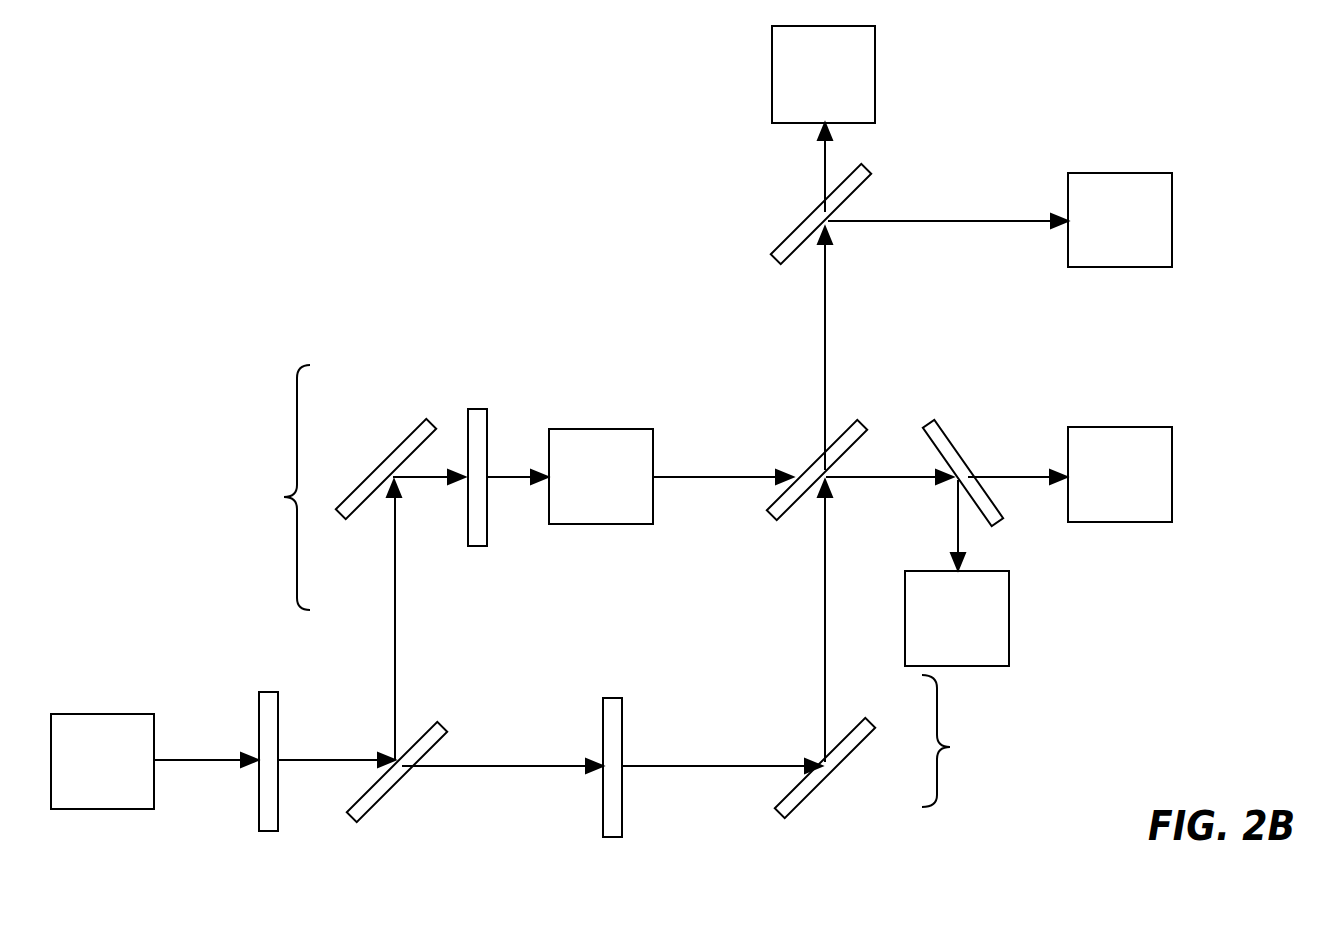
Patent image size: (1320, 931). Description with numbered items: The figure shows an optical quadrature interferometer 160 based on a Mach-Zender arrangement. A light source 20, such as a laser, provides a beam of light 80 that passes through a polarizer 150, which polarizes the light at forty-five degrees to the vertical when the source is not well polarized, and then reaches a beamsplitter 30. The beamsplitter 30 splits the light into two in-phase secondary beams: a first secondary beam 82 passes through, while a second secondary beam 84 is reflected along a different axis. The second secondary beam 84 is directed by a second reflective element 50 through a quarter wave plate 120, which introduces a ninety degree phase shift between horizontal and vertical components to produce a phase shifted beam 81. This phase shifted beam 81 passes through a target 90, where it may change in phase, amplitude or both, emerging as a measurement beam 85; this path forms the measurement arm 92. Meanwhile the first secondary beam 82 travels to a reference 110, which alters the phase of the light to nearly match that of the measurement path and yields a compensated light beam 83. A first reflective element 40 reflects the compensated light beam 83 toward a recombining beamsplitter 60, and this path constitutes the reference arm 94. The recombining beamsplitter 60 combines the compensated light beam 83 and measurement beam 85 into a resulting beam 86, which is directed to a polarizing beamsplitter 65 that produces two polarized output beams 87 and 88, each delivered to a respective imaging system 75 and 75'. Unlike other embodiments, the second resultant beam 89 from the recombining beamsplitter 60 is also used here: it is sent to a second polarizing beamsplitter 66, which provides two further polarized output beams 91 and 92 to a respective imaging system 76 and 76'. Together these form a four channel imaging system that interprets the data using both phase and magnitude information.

The light source 20 is at (102, 761).
The beamsplitter 30 is at (447, 737).
The first reflective element 40 is at (843, 772).
The second reflective element 50 is at (382, 462).
The recombining beamsplitter 60 is at (808, 462).
The polarizing beamsplitter 65 is at (960, 462).
The second polarizing beamsplitter 66 is at (800, 227).
The imaging system 75 is at (1120, 474).
The imaging system 75' is at (957, 618).
The imaging system 76 is at (823, 74).
The imaging system 76' is at (1120, 220).
The beam of light 80 is at (180, 757).
The phase shifted beam 81 is at (507, 480).
The first secondary beam 82 is at (518, 777).
The compensated light beam 83 is at (698, 765).
The second secondary beam 84 is at (395, 581).
The measurement beam 85 is at (723, 480).
The resulting beam 86 is at (897, 480).
The polarized output beam 87 is at (1022, 480).
The polarized output beam 88 is at (958, 527).
The second resultant beam 89 is at (826, 285).
The target 90 is at (601, 476).
The polarized output beam 91 is at (826, 154).
The measurement arm 92 is at (933, 221).
The reference arm 94 is at (1003, 741).
The reference 110 is at (603, 707).
The quarter wave plate 120 is at (476, 408).
The polarizer 150 is at (325, 659).
The optical quadrature interferometer 160 is at (228, 322).